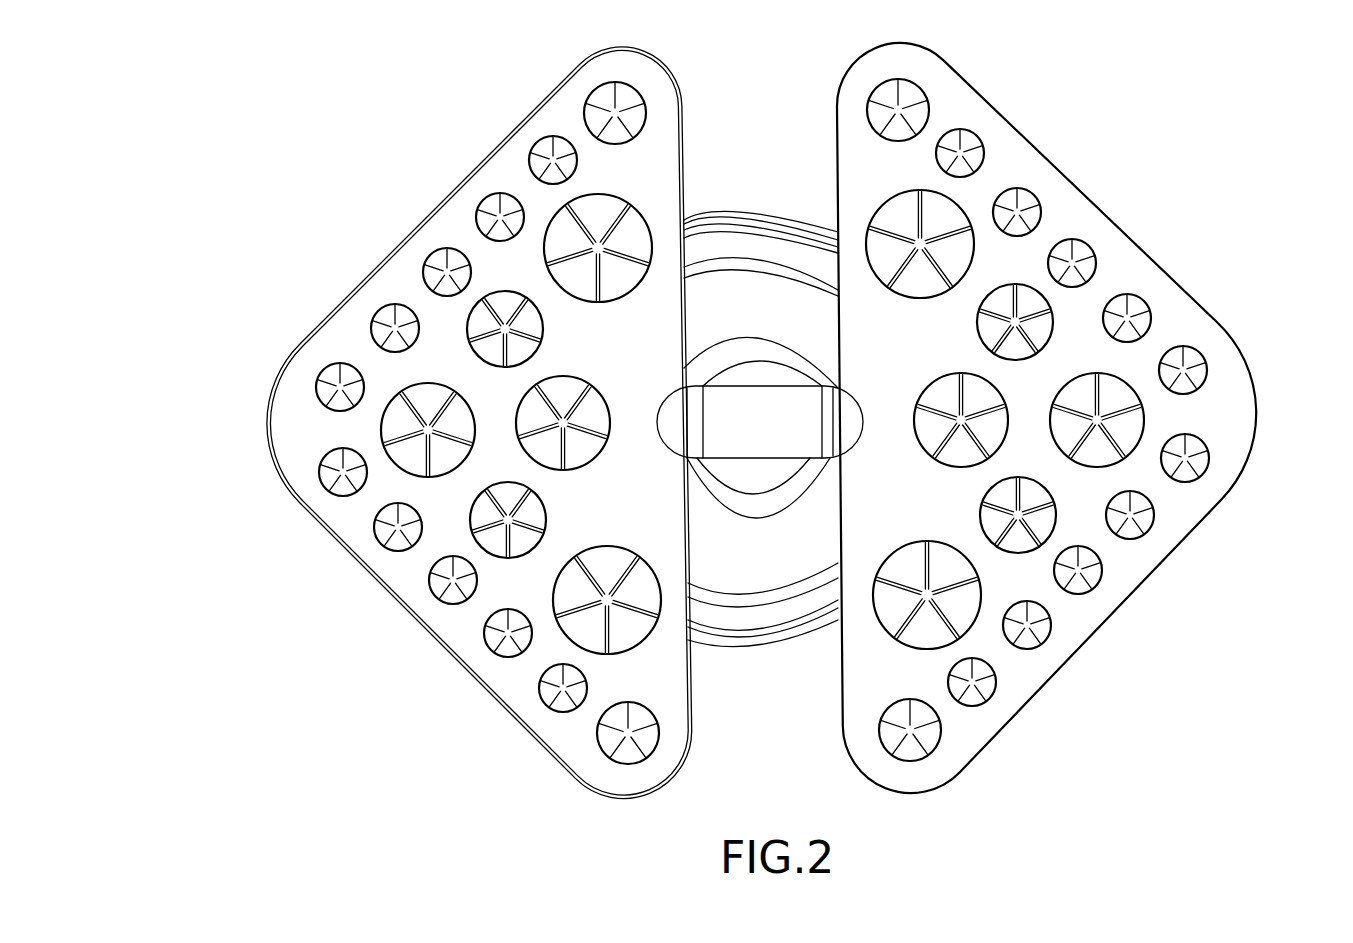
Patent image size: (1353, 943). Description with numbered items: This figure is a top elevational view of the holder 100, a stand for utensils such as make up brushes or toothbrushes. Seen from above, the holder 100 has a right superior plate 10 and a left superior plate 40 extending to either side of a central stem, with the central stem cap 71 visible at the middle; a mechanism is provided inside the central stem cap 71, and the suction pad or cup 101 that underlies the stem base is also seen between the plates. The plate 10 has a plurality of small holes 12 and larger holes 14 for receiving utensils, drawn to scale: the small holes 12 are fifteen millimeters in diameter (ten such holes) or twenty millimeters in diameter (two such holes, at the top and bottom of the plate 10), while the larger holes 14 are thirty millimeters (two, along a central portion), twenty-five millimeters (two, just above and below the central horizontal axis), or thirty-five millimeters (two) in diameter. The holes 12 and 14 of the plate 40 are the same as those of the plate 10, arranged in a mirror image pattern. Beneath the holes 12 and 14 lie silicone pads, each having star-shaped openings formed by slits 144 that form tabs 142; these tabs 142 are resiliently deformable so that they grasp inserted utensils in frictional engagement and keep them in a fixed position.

The holder 100 is at (300, 235).
The left superior plate 40 is at (450, 217).
The right superior plate 10 is at (1063, 218).
The suction pad or cup 101 is at (755, 622).
The central stem cap 71 is at (755, 418).
The small holes 12 is at (377, 537).
The larger holes 14 is at (720, 468).
The tabs 142 is at (958, 600).
The slits 144 is at (948, 630).